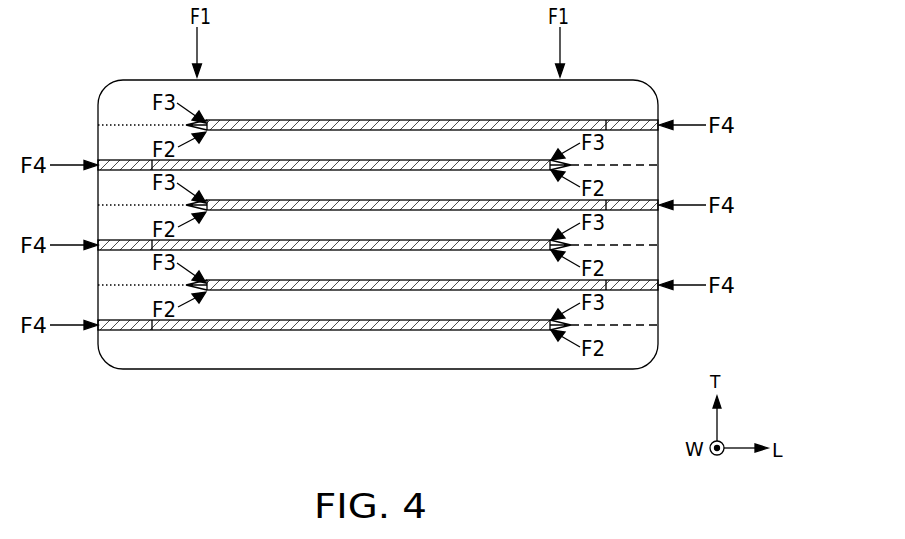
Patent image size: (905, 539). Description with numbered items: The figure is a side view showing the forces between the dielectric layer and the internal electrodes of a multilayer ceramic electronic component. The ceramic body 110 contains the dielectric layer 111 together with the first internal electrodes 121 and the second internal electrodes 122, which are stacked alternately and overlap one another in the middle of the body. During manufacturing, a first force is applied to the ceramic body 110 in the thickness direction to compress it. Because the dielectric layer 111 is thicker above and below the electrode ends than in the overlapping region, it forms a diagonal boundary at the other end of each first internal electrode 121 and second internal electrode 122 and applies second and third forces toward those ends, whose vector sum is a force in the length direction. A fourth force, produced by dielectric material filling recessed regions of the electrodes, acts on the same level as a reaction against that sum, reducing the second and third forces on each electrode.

The ceramic body 110 is at (297, 74).
The dielectric layer 111 is at (420, 143).
The first internal electrode 121 is at (370, 120).
The second internal electrode 122 is at (473, 161).